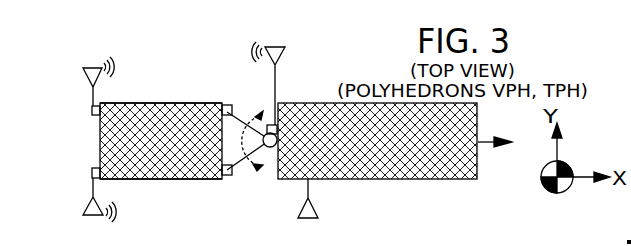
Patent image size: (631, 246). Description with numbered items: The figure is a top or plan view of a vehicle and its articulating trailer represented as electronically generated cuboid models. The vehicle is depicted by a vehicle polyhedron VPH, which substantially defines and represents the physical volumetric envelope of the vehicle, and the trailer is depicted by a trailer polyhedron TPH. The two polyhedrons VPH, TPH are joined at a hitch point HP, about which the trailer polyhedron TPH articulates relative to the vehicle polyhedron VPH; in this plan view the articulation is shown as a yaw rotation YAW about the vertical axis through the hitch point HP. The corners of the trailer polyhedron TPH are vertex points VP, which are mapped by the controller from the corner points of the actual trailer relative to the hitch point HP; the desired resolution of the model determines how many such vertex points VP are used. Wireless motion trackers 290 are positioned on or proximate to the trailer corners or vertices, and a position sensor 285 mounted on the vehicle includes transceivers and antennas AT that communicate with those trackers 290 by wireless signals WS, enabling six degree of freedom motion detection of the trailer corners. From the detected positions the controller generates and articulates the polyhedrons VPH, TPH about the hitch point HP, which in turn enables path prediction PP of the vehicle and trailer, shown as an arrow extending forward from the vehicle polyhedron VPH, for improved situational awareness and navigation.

The wireless motion trackers 290 is at (92, 105).
The position sensor 285 is at (270, 124).
The trailer polyhedron TPH is at (100, 150).
The vehicle polyhedron VPH is at (437, 180).
The vertex point VP is at (210, 101).
The antenna AT is at (83, 69).
The wireless signal WS is at (115, 217).
The hitch point HP is at (271, 148).
The yaw rotation YAW is at (256, 166).
The path prediction PP is at (487, 148).